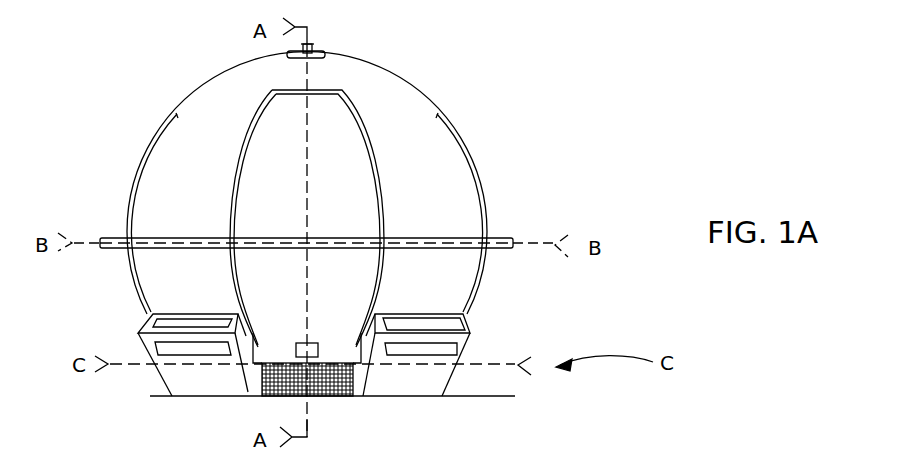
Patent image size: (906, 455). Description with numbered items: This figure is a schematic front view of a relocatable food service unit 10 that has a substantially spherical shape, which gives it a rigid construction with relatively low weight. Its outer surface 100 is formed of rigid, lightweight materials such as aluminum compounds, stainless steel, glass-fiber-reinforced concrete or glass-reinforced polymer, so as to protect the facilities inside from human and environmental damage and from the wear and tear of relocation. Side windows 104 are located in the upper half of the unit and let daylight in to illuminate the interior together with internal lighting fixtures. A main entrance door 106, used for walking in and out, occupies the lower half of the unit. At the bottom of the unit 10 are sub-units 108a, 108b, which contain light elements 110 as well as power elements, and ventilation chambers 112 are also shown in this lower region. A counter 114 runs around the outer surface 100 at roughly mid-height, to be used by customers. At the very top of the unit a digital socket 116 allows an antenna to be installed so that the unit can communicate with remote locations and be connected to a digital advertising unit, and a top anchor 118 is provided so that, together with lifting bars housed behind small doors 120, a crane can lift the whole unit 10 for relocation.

The food service unit 10 is at (126, 118).
The outer surface 100 is at (392, 72).
The side windows 104 is at (135, 183).
The main entrance door 106 is at (358, 292).
The sub-unit 108a is at (427, 380).
The sub-unit 108b is at (188, 382).
The light elements 110 is at (175, 323).
The ventilation chambers 112 is at (334, 398).
The counter 114 is at (122, 250).
The digital socket 116 is at (312, 43).
The top anchor 118 is at (327, 53).
The small doors 120 is at (296, 349).